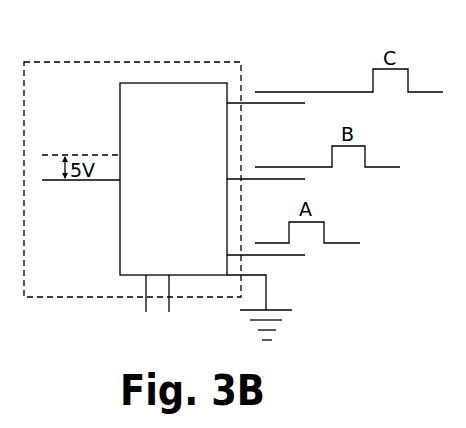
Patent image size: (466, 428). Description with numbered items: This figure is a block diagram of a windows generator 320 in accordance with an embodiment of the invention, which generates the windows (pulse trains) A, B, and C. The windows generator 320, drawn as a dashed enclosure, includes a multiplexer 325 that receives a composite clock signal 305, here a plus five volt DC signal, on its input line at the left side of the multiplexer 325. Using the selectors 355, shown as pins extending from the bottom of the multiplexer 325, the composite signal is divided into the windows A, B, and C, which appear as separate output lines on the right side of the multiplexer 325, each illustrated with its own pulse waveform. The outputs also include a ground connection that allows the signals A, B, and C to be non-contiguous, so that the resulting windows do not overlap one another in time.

The windows generator 320 is at (80, 62).
The composite clock signal 305 is at (78, 155).
The multiplexer 325 is at (173, 179).
The selectors 355 is at (169, 318).